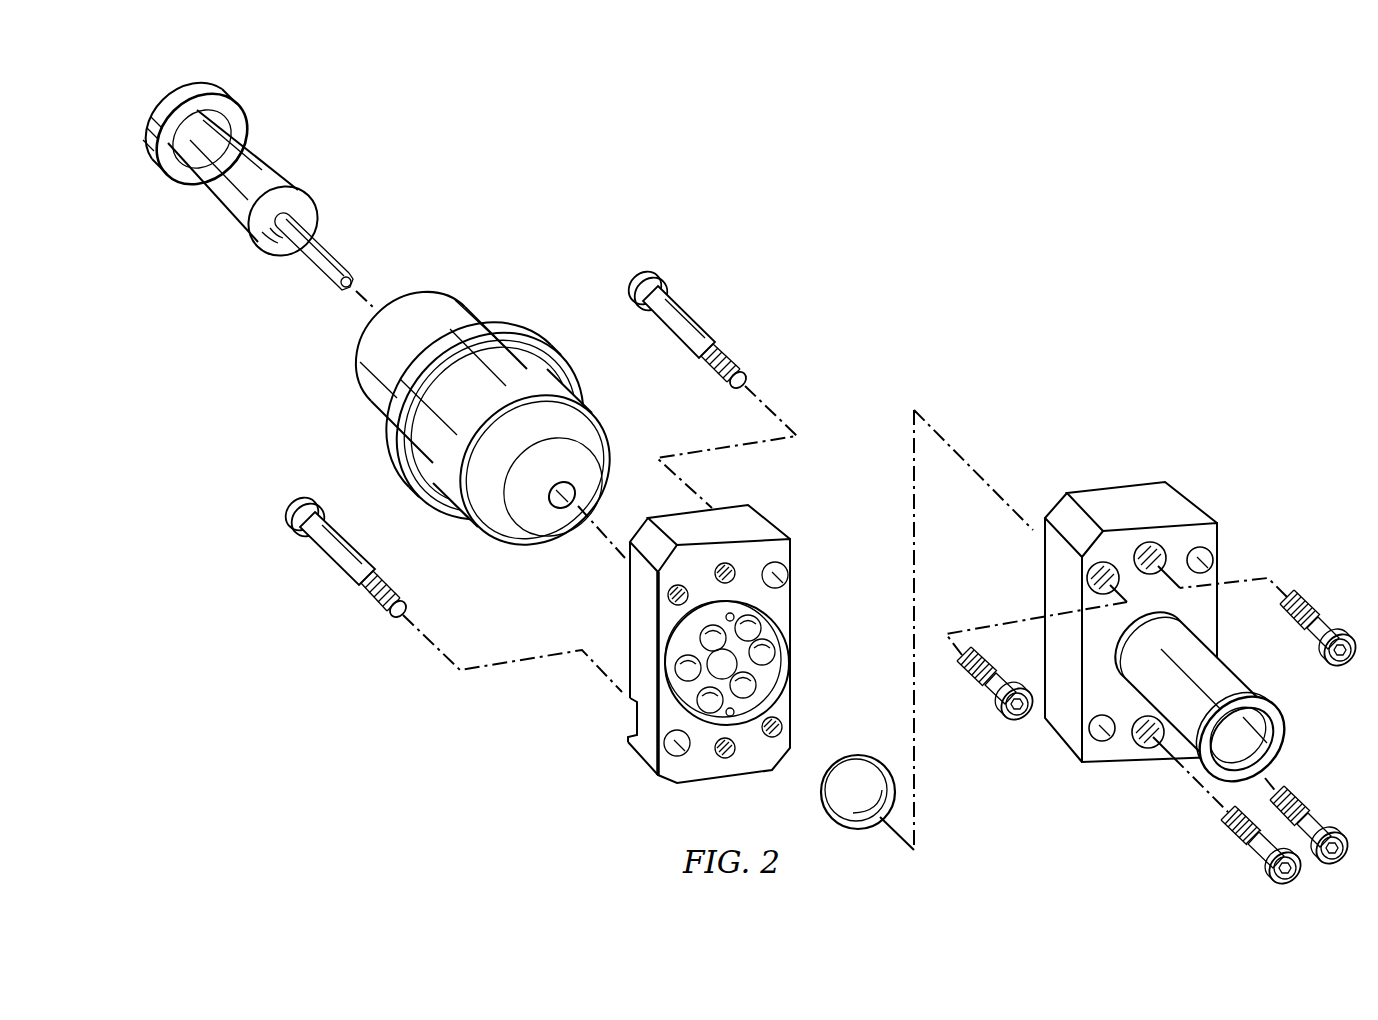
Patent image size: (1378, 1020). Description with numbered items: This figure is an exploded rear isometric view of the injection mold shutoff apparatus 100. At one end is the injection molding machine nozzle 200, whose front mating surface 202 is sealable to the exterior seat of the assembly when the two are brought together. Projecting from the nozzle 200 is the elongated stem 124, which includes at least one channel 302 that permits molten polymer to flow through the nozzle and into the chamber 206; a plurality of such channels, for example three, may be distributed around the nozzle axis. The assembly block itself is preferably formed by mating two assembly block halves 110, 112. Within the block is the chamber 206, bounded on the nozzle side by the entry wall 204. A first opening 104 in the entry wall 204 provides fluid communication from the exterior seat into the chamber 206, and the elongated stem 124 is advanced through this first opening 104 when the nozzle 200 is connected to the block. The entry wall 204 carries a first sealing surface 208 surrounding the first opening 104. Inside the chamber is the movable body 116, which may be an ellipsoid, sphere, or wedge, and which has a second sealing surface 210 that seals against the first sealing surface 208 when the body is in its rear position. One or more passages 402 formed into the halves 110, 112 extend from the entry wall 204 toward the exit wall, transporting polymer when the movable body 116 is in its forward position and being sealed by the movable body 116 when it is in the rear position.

The injection mold shutoff apparatus 100 is at (870, 338).
The first opening 104 is at (712, 626).
The assembly block half 110 is at (770, 523).
The assembly block half 112 is at (1193, 507).
The movable body 116 is at (862, 829).
The elongated stem 124 is at (326, 288).
The injection molding machine nozzle 200 is at (547, 348).
The front mating surface 202 is at (527, 508).
The entry wall 204 is at (760, 628).
The chamber 206 is at (630, 699).
The first sealing surface 208 is at (757, 689).
The second sealing surface 210 is at (821, 795).
The channel 302 is at (320, 252).
The passage 402 is at (775, 658).